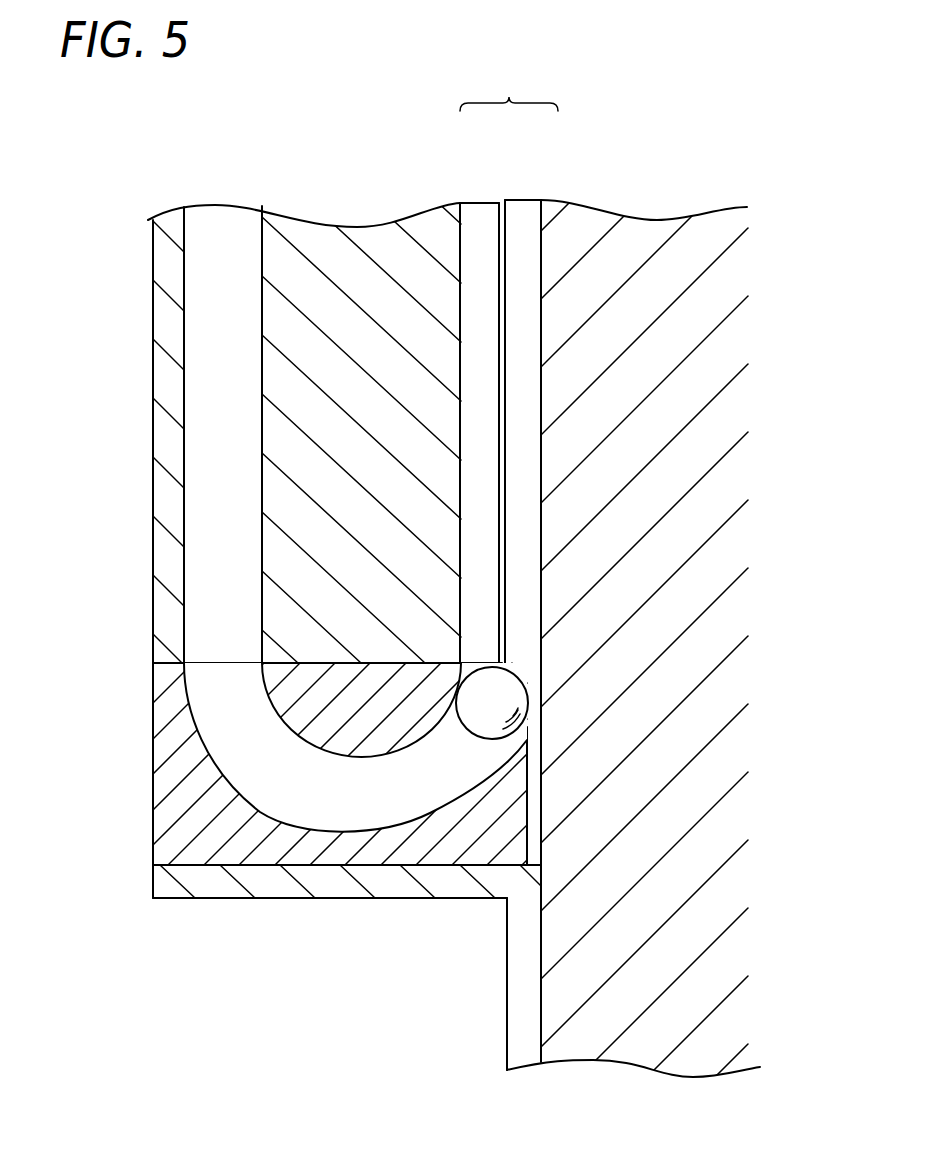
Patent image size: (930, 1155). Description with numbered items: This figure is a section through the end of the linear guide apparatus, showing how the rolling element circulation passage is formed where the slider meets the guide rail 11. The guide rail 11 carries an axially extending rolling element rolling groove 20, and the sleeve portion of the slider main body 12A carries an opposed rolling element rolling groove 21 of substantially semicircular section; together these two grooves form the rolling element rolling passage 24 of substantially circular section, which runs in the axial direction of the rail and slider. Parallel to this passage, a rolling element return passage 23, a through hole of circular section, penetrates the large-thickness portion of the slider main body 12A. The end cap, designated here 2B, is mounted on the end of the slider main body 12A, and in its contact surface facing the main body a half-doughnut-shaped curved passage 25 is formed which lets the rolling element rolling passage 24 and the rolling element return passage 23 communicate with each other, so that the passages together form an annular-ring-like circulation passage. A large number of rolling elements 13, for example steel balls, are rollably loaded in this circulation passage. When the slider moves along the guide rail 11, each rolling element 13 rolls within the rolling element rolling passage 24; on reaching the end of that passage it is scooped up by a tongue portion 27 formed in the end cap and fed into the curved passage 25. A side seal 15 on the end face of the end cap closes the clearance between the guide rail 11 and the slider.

The guide rail 11 is at (718, 482).
The slider main body 12A is at (162, 330).
The rolling element 13 is at (474, 719).
The side seal 15 is at (192, 882).
The rolling element rolling groove 20 is at (520, 218).
The rolling element rolling groove 21 is at (473, 222).
The rolling element return passage 23 is at (220, 467).
The rolling element rolling passage 24 is at (509, 568).
The curved passage 25 is at (245, 727).
The tongue portion 27 is at (527, 726).
The second member 2B is at (198, 814).